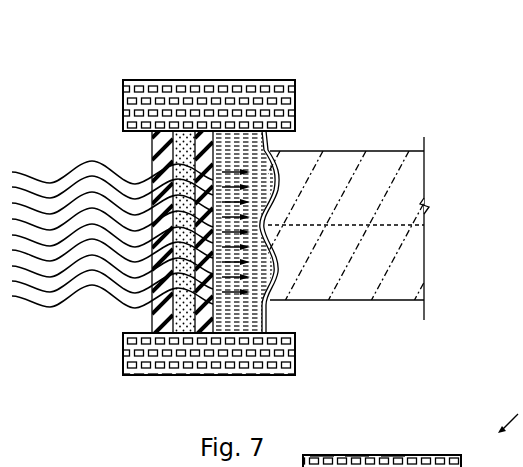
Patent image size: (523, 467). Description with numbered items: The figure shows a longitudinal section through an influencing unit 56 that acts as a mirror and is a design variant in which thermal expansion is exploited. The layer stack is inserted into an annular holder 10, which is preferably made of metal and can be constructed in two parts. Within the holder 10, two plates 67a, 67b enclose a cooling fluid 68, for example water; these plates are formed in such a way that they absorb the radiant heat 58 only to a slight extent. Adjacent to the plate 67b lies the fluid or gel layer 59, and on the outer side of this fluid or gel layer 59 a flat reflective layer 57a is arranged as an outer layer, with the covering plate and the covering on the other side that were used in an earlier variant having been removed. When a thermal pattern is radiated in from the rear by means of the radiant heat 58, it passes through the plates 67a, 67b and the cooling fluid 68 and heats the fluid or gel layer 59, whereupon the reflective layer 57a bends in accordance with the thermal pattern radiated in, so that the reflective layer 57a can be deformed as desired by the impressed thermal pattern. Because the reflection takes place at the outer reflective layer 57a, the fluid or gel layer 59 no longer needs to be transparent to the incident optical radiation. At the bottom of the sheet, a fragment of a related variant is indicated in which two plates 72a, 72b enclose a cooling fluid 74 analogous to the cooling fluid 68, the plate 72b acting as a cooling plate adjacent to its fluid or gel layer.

The influencing unit 56 is at (335, 50).
The holder 10 is at (281, 108).
The plate 67a is at (162, 133).
The cooling fluid 68 is at (183, 137).
The plate 67b is at (207, 140).
The fluid or gel layer 59 is at (262, 146).
The flat reflective layer 57a is at (268, 305).
The radiant heat 58 is at (40, 268).
The plate 72a is at (322, 456).
The cooling fluid 74 is at (357, 456).
The plate 72b is at (393, 456).